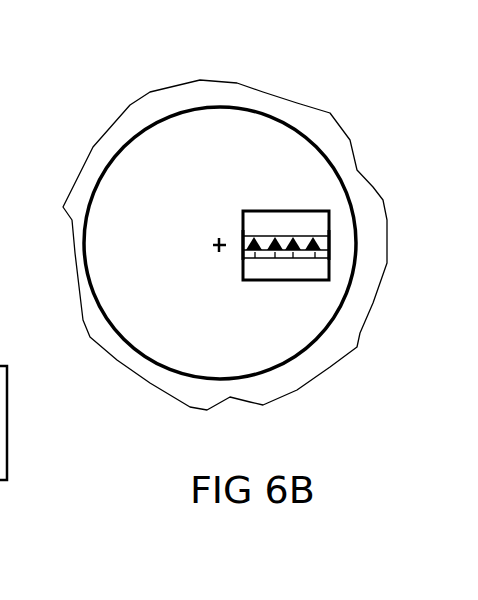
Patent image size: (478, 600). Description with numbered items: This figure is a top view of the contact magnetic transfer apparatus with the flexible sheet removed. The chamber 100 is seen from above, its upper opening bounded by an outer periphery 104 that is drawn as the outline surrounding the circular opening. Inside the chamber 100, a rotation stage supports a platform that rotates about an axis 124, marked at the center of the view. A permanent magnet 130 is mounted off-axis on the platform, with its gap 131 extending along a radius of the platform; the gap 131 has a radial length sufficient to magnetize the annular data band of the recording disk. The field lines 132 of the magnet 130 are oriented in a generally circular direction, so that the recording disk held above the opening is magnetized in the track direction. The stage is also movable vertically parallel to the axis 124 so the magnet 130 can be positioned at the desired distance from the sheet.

The chamber 100 is at (110, 147).
The outer periphery 104 is at (152, 123).
The axis 124 is at (215, 248).
The permanent magnet 130 is at (283, 268).
The gap 131 is at (243, 245).
The field lines 132 is at (329, 248).